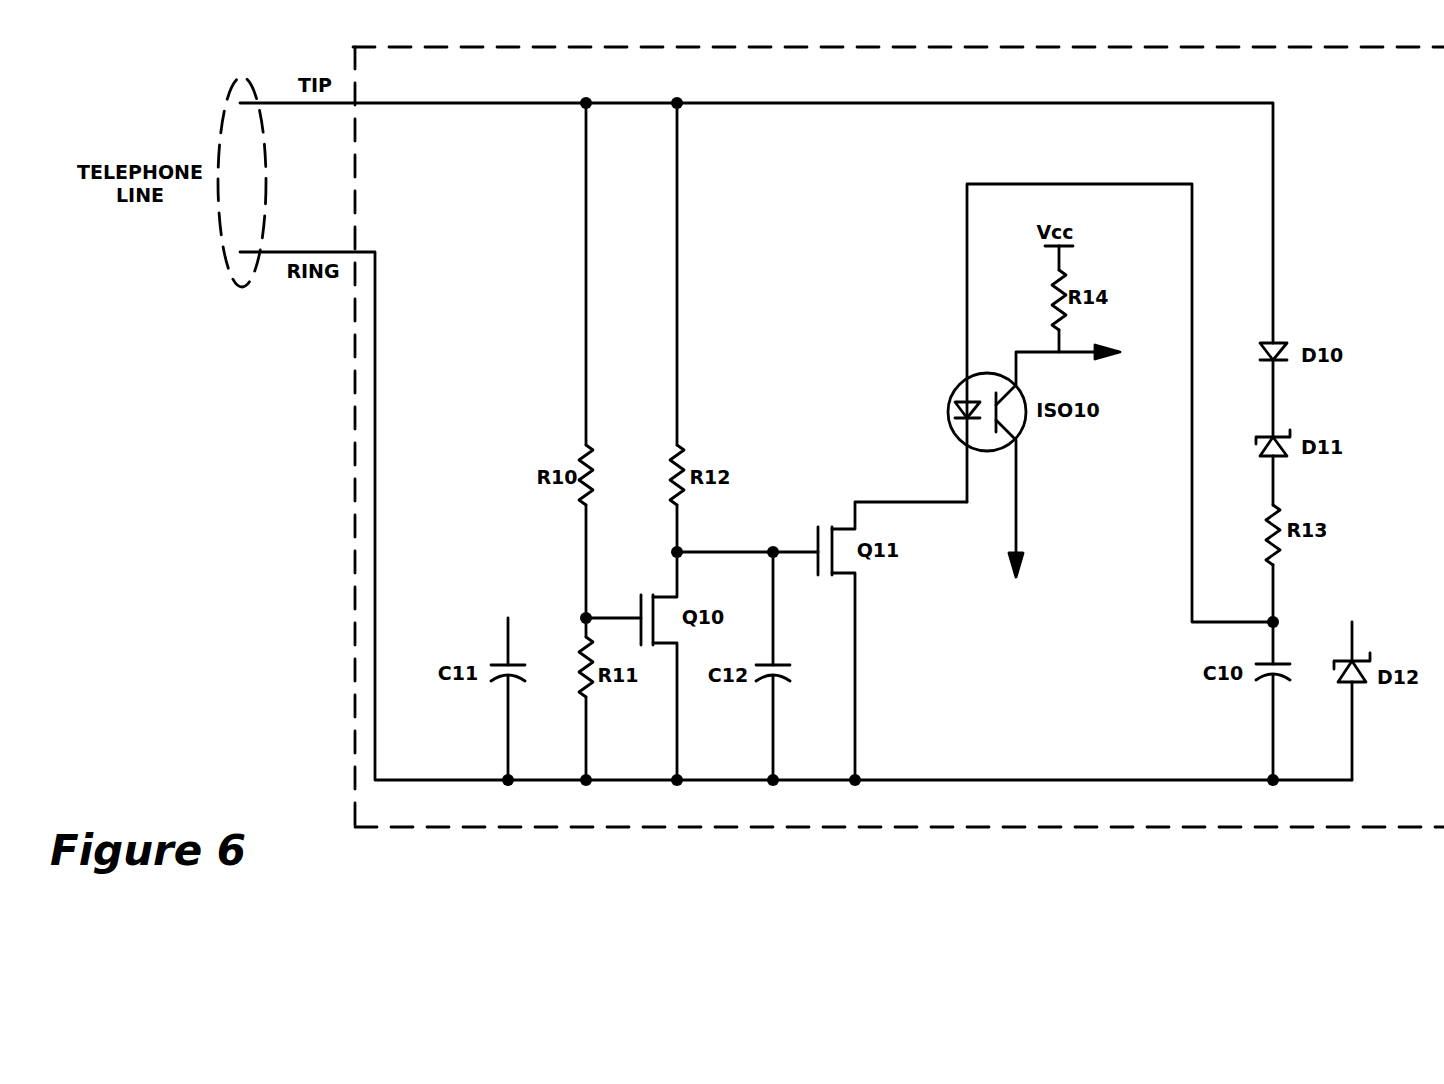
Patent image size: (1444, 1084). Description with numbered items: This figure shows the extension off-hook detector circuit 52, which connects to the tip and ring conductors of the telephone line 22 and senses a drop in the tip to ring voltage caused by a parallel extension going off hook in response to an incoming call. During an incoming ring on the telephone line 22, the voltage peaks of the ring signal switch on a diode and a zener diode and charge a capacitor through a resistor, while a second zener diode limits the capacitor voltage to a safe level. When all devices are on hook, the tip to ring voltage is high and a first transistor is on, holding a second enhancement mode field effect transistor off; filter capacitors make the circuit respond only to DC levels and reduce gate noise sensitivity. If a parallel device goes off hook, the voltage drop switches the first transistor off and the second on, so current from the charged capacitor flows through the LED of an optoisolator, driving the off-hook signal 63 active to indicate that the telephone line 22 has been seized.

The telephone line 22 is at (237, 291).
The extension off-hook detector circuit 52 is at (350, 536).
The off-hook signal 63 is at (1112, 340).